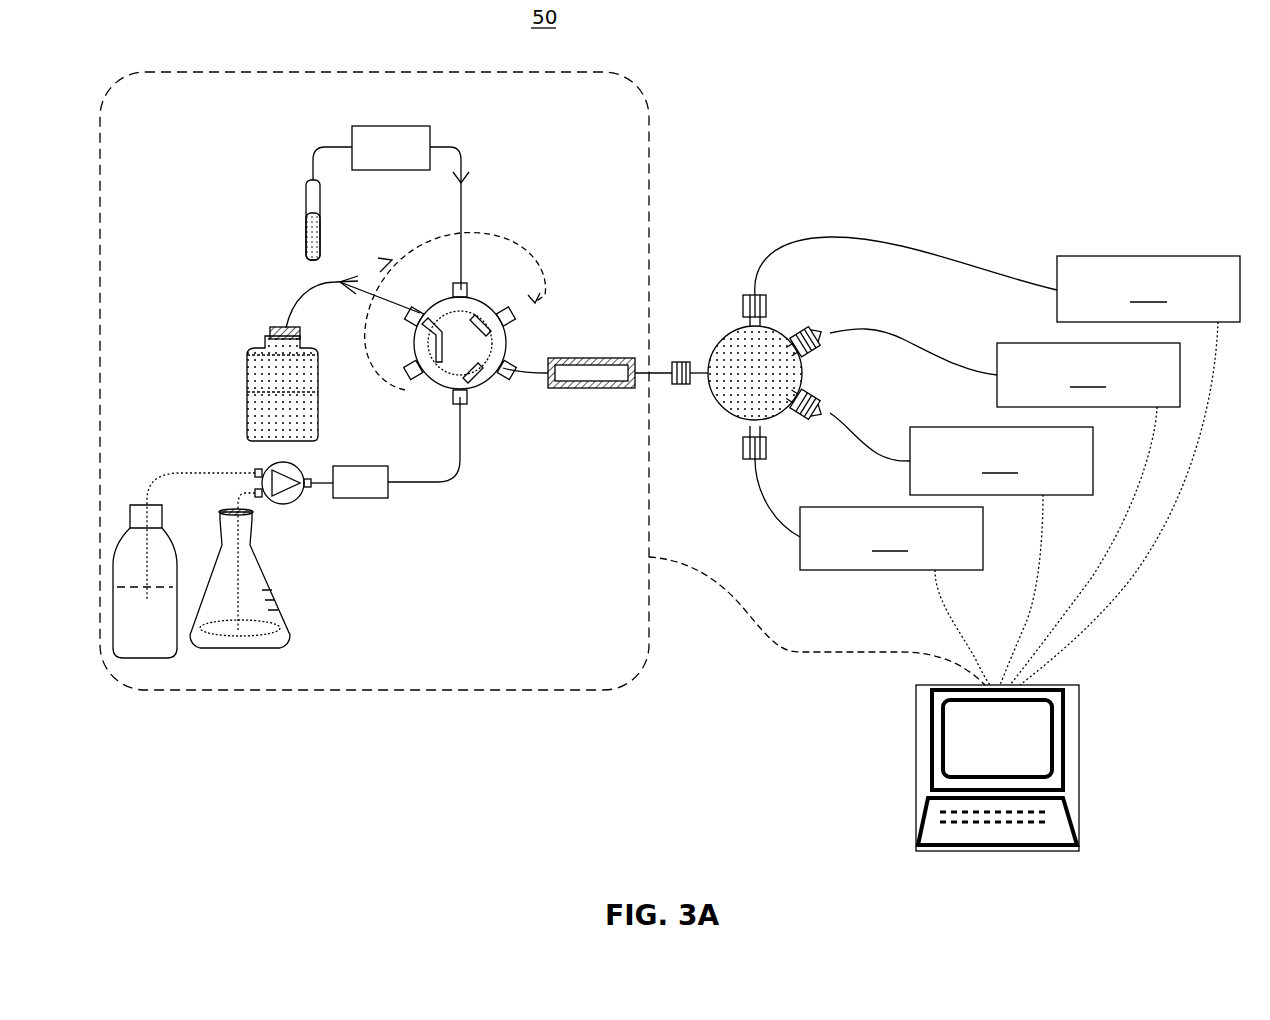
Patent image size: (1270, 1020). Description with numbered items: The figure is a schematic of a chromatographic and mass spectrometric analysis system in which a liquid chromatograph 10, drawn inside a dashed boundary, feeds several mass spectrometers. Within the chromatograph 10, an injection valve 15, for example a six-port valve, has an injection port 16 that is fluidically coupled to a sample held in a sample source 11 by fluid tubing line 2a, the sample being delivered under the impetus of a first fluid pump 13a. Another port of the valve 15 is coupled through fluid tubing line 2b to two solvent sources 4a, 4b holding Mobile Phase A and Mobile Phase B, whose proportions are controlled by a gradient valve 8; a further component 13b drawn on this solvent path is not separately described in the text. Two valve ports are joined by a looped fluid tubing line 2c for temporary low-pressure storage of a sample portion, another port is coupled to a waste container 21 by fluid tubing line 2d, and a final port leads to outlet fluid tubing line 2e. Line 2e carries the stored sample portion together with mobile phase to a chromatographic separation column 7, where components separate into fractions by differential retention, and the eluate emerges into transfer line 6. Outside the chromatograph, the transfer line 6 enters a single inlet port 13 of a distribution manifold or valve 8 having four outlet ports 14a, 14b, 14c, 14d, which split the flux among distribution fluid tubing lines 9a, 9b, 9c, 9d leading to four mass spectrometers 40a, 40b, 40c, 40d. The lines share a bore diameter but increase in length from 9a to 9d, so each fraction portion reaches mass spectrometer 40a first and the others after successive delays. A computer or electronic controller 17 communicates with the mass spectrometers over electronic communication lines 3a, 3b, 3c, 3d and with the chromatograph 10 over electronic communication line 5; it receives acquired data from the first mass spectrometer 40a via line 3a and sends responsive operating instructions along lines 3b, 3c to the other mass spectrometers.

The liquid chromatograph 10 is at (651, 150).
The first fluid pump 13a is at (370, 127).
The sample source 11 is at (292, 230).
The fluid tubing line 2a is at (466, 212).
The fluid tubing line 2b is at (440, 493).
The looped fluid tubing line 2c is at (412, 246).
The fluid tubing line 2d is at (290, 302).
The outlet fluid tubing line 2e is at (520, 376).
The injection valve 15 is at (444, 346).
The injection port 16 is at (468, 291).
The chromatographic separation column 7 is at (588, 390).
The transfer line 6 is at (665, 380).
The inlet port 13 is at (685, 390).
The distribution manifold or valve 8 is at (716, 315).
The outlet port 14a is at (768, 450).
The outlet port 14b is at (818, 402).
The outlet port 14c is at (806, 330).
The outlet port 14d is at (742, 305).
The distribution fluid tubing line 9a is at (760, 500).
The distribution fluid tubing line 9b is at (888, 444).
The distribution fluid tubing line 9c is at (923, 350).
The distribution fluid tubing line 9d is at (832, 237).
The mass spectrometer 40a is at (891, 538).
The mass spectrometer 40b is at (1001, 461).
The mass spectrometer 40c is at (1088, 375).
The mass spectrometer 40d is at (1148, 289).
The electronic communication line 3a is at (935, 605).
The electronic communication line 3b is at (1030, 588).
The electronic communication line 3c is at (1122, 516).
The electronic communication line 3d is at (1107, 562).
The electronic communication line 5 is at (766, 650).
The computer or electronic controller 17 is at (1080, 742).
The waste container 21 is at (230, 387).
The degasser 13b is at (360, 499).
The solvent source 4a is at (122, 502).
The solvent source 4b is at (212, 536).